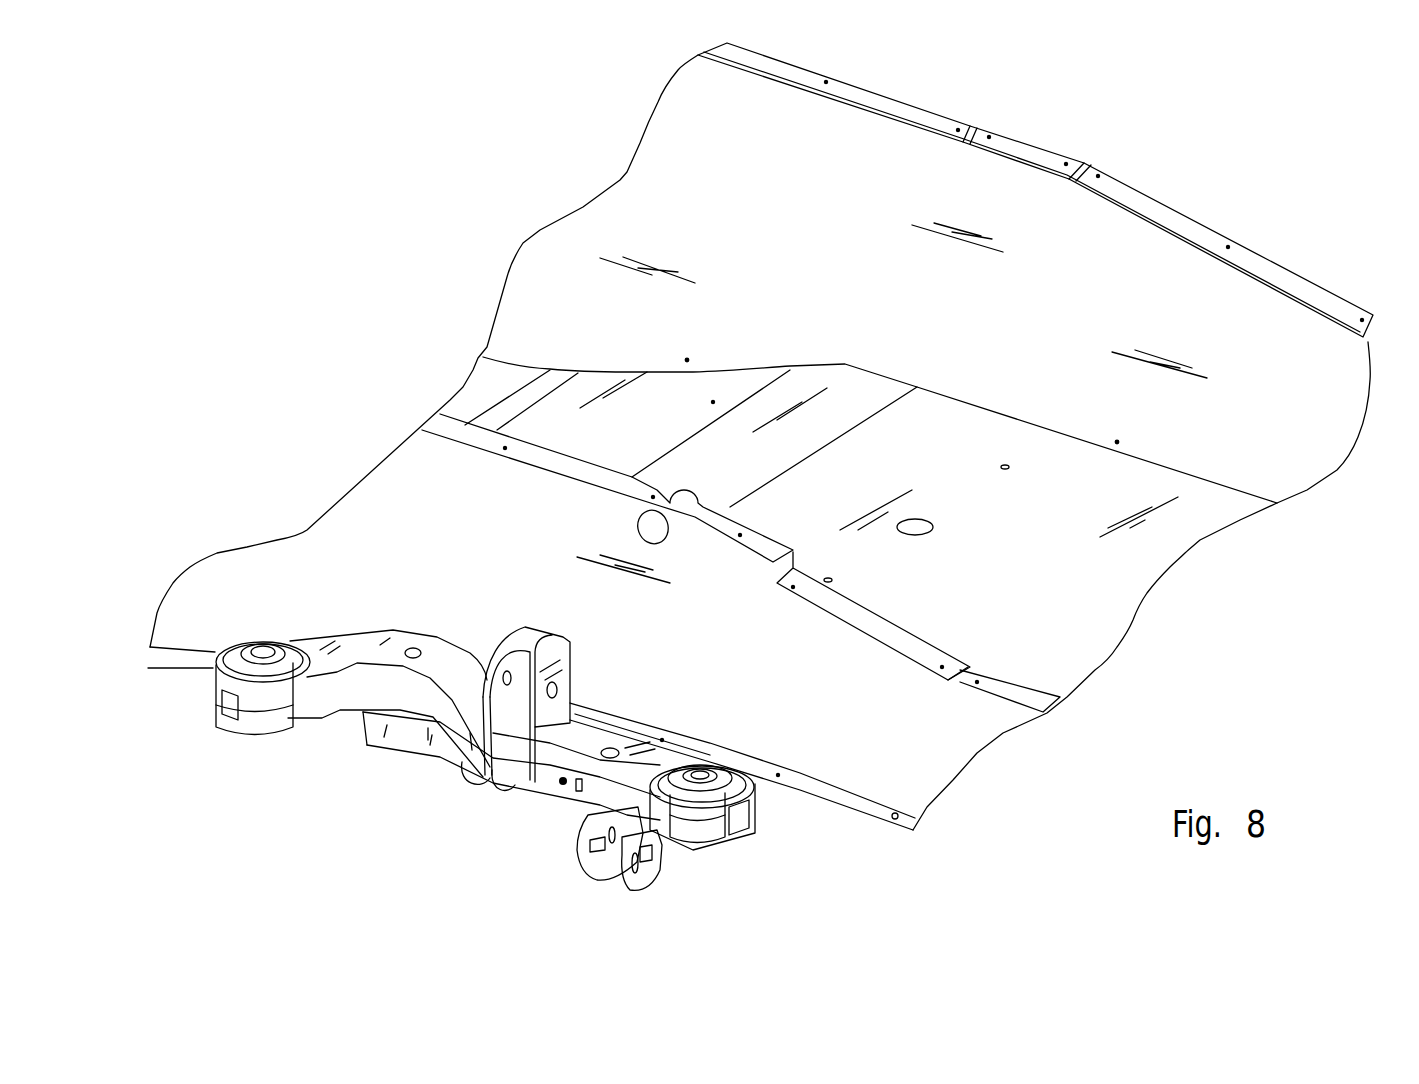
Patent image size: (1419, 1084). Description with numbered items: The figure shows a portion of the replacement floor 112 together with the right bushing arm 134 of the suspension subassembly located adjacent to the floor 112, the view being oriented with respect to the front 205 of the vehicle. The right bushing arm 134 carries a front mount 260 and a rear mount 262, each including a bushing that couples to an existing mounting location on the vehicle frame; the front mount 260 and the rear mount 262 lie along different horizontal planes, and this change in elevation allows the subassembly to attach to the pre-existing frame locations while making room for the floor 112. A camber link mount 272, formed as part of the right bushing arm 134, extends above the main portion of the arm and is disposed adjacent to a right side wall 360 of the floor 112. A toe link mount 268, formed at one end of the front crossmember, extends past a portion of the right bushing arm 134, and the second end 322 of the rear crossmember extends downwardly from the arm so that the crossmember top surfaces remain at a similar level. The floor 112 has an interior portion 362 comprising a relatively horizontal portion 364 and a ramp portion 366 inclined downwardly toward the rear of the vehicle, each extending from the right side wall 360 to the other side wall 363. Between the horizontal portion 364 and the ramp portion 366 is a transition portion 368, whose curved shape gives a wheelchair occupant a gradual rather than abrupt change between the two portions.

The floor 112 is at (1212, 217).
The right bushing arm 134 is at (455, 807).
The front 205 is at (1254, 645).
The front mount 260 is at (750, 792).
The rear mount 262 is at (217, 678).
The toe link mount 268 is at (637, 877).
The camber link mount 272 is at (563, 682).
The second end 322 is at (380, 735).
The right side wall 360 is at (400, 500).
The interior portion 362 is at (567, 287).
The side wall 363 is at (1285, 452).
The horizontal portion 364 is at (1026, 580).
The ramp portion 366 is at (654, 443).
The transition portion 368 is at (754, 478).